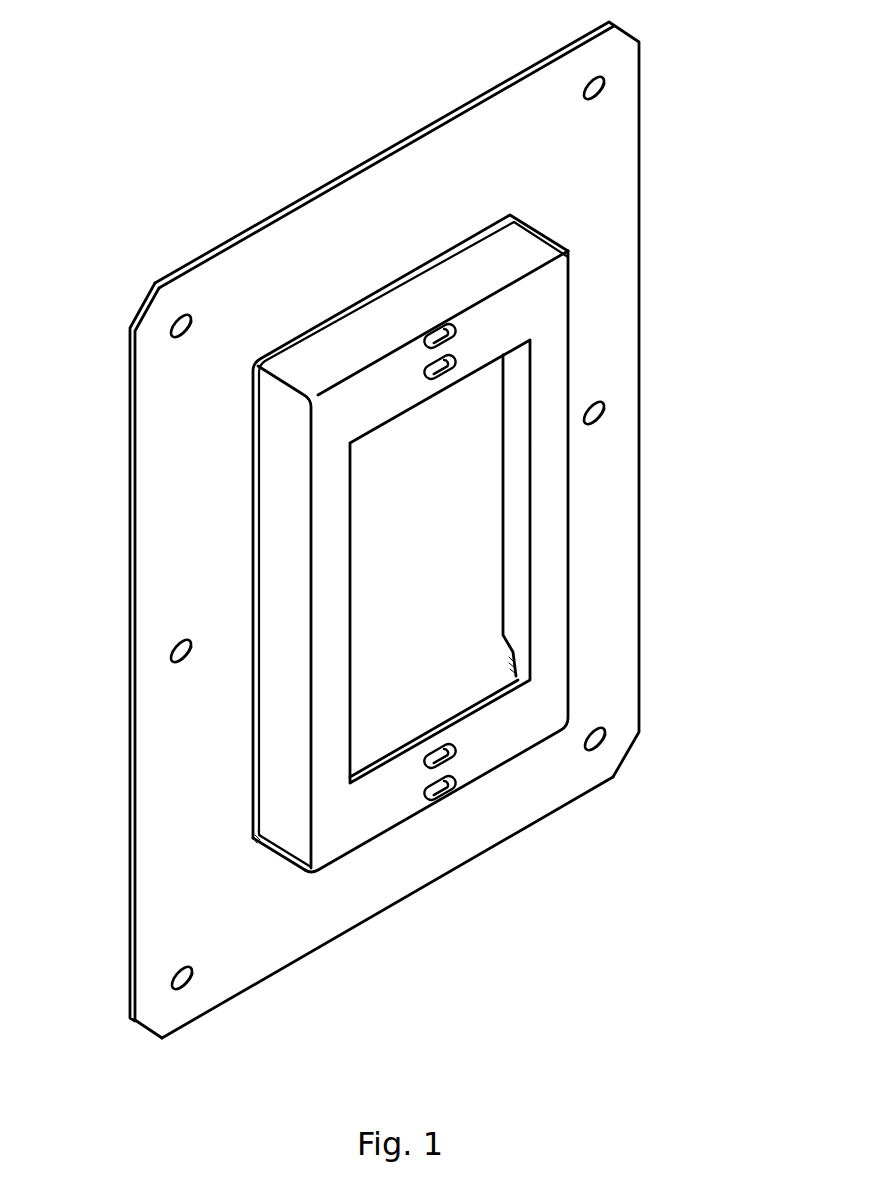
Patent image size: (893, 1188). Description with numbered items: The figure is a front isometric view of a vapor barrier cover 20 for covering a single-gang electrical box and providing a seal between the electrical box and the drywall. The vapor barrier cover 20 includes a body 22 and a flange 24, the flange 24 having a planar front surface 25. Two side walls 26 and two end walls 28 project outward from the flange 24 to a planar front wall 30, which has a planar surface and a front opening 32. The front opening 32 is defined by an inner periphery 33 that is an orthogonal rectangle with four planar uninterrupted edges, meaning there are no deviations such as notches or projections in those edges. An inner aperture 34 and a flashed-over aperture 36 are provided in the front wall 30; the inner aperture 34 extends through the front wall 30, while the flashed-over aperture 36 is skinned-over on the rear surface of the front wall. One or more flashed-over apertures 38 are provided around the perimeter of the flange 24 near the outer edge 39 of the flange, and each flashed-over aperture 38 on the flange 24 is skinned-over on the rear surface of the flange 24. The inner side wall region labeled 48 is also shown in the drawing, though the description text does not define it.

The vapor barrier cover 20 is at (136, 139).
The body 22 is at (545, 233).
The flange 24 is at (617, 115).
The planar front surface 25 is at (387, 244).
The side walls 26 is at (302, 613).
The end walls 28 is at (428, 321).
The front wall 30 is at (377, 412).
The front opening 32 is at (450, 563).
The inner periphery 33 is at (448, 722).
The inner aperture 34 is at (460, 358).
The flashed-over aperture 36 is at (455, 327).
The flashed-over apertures 38 is at (601, 742).
The outer edge 39 is at (257, 983).
The inner side wall 48 is at (513, 512).